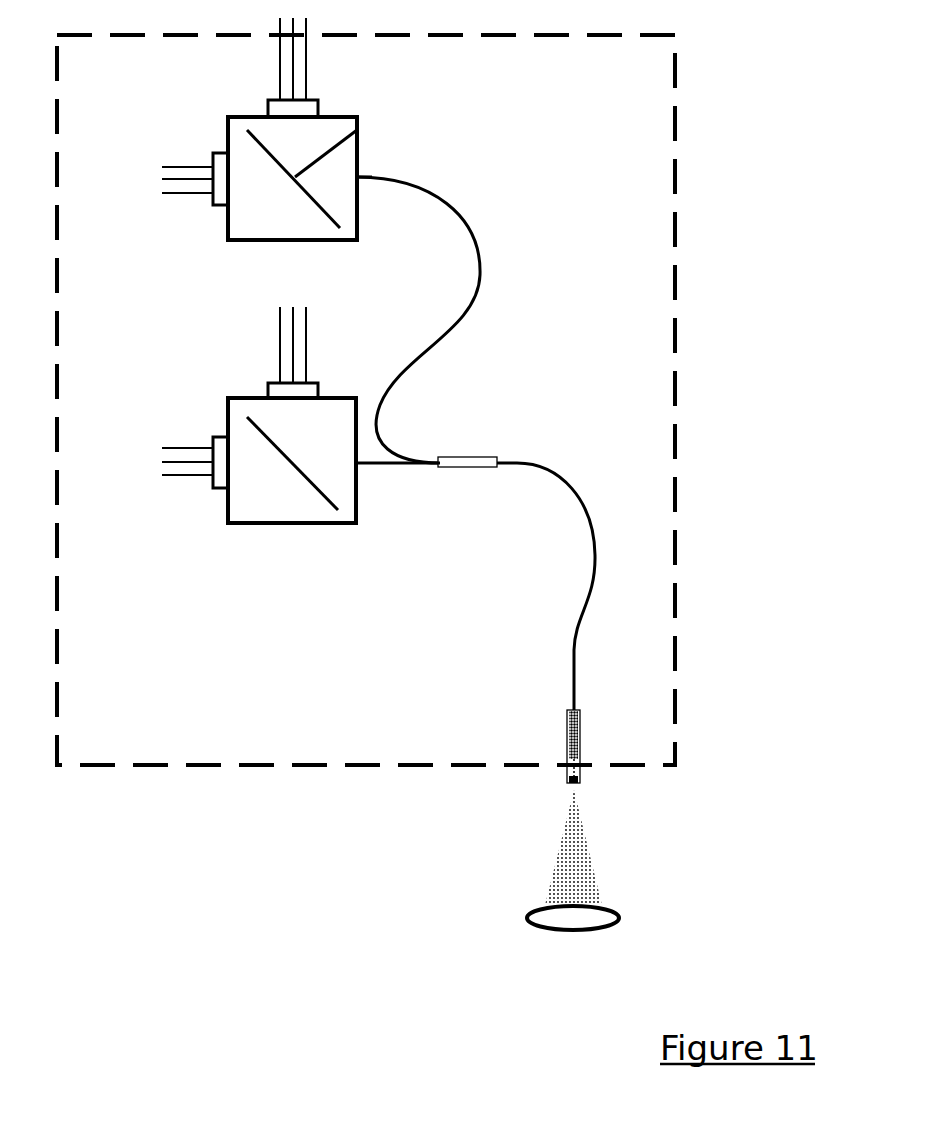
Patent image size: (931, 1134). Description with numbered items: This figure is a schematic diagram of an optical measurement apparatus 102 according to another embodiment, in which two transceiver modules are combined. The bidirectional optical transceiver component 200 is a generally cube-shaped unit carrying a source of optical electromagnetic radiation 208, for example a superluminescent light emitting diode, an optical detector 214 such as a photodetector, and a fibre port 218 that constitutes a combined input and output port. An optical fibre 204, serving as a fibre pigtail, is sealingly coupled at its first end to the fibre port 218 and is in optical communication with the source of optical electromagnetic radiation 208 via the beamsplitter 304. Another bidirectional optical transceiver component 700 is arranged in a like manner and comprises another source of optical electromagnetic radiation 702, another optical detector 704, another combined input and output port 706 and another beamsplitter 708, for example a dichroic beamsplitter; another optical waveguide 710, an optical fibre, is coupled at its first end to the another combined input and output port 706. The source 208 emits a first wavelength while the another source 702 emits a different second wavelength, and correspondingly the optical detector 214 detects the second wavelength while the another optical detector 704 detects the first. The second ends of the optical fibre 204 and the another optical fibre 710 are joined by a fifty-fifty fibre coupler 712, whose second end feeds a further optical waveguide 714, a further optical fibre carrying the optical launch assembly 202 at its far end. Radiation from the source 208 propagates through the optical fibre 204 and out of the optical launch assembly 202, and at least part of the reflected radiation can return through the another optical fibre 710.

The optical measurement apparatus 102 is at (368, 765).
The bidirectional optical transceiver component 200 is at (260, 240).
The optical launch assembly 202 is at (567, 748).
The optical fibre 204 is at (472, 222).
The source of optical electromagnetic radiation 208 is at (268, 108).
The optical detector 214 is at (213, 157).
The fibre port 218 is at (357, 177).
The beamsplitter 304 is at (357, 127).
The another bidirectional optical transceiver component 700 is at (320, 523).
The another source of optical electromagnetic radiation 702 is at (268, 391).
The another optical detector 704 is at (213, 447).
The another combined input and output port 706 is at (358, 465).
The another beamsplitter 708 is at (313, 487).
The another optical waveguide 710 is at (382, 465).
The fibre coupler 712 is at (468, 457).
The further optical waveguide 714 is at (577, 620).